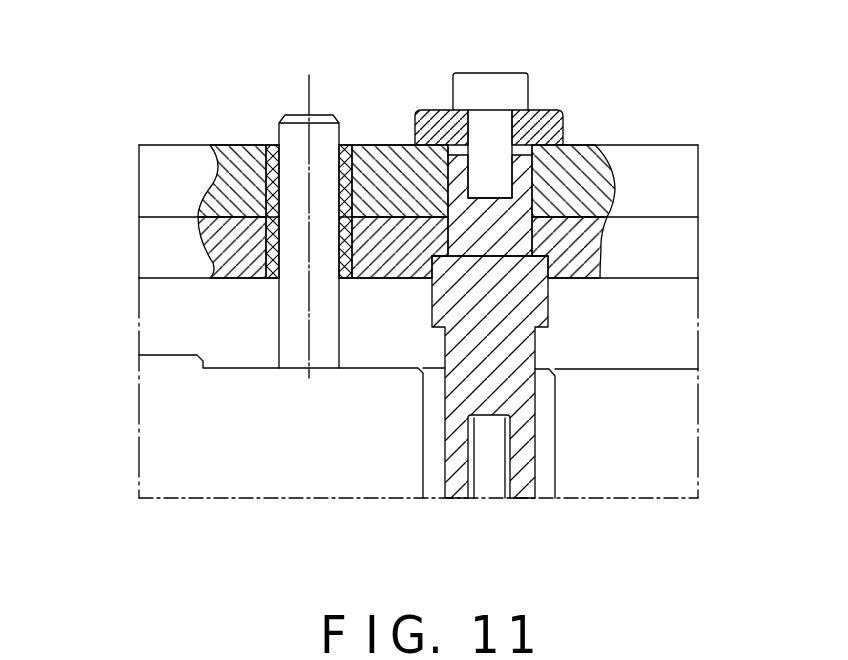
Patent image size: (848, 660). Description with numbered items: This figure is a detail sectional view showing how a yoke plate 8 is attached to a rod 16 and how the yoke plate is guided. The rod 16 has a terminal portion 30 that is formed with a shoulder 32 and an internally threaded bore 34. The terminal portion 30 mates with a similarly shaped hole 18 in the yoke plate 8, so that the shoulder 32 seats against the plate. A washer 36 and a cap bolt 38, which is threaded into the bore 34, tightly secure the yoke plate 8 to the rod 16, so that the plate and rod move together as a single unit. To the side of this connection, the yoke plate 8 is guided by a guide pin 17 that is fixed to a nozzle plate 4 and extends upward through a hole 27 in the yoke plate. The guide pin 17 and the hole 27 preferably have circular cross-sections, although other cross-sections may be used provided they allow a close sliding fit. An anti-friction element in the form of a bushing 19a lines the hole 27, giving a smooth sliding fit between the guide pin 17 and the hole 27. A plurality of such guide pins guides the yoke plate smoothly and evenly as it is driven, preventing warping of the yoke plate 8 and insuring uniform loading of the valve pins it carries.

The nozzle plate 4 is at (285, 453).
The yoke plate 8 is at (662, 192).
The rod 16 is at (530, 295).
The guide pin 17 is at (302, 325).
The hole 18 is at (527, 205).
The bushing 19a is at (265, 145).
The hole 27 is at (355, 145).
The terminal portion 30 is at (525, 165).
The shoulder 32 is at (550, 252).
The internally threaded bore 34 is at (478, 132).
The washer 36 is at (558, 110).
The cap bolt 38 is at (467, 80).